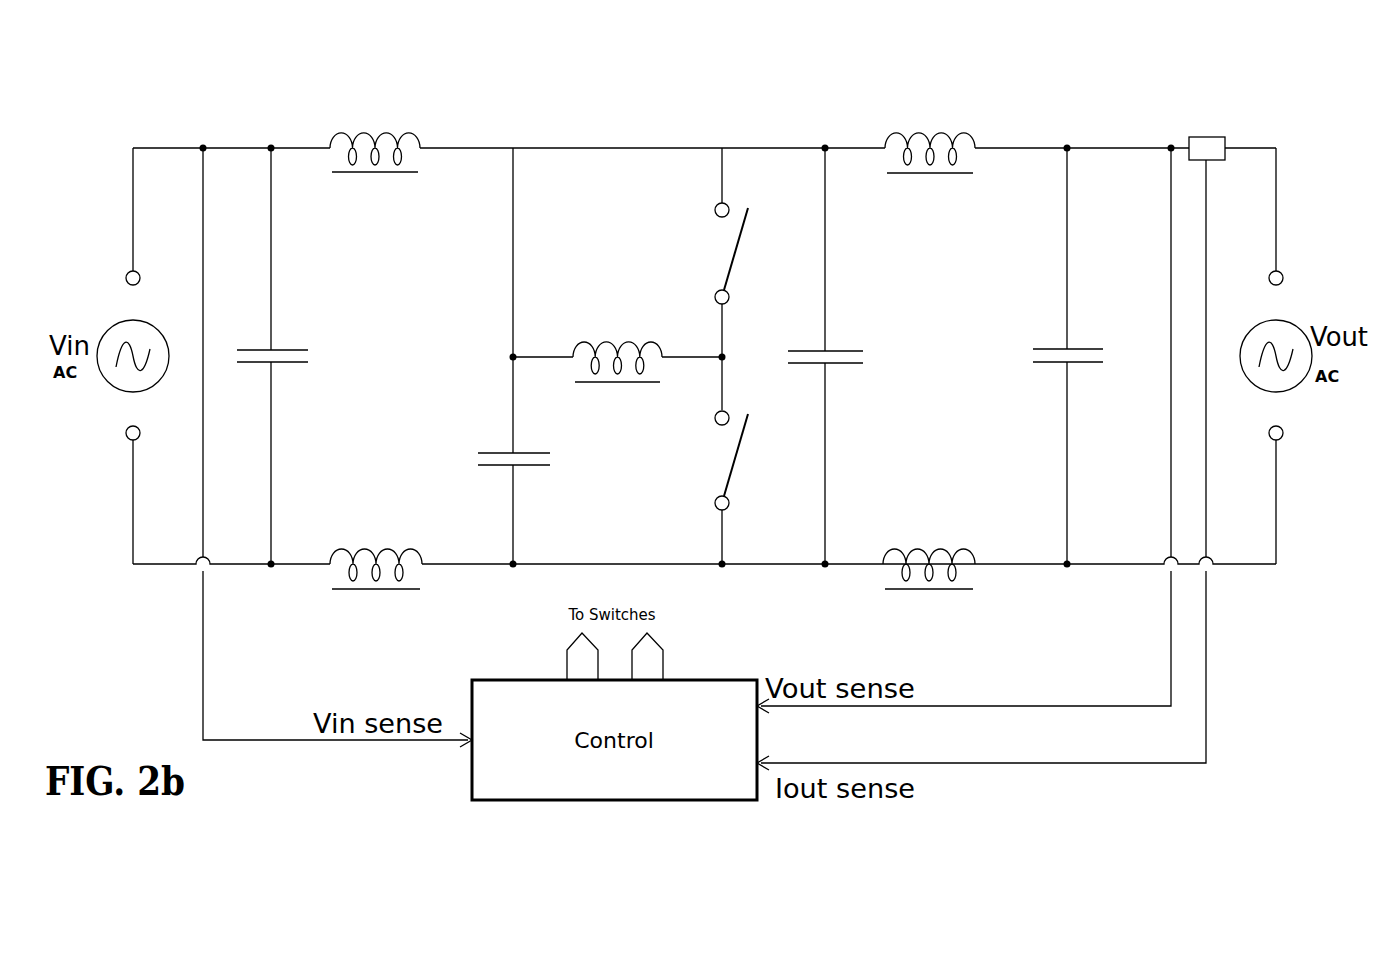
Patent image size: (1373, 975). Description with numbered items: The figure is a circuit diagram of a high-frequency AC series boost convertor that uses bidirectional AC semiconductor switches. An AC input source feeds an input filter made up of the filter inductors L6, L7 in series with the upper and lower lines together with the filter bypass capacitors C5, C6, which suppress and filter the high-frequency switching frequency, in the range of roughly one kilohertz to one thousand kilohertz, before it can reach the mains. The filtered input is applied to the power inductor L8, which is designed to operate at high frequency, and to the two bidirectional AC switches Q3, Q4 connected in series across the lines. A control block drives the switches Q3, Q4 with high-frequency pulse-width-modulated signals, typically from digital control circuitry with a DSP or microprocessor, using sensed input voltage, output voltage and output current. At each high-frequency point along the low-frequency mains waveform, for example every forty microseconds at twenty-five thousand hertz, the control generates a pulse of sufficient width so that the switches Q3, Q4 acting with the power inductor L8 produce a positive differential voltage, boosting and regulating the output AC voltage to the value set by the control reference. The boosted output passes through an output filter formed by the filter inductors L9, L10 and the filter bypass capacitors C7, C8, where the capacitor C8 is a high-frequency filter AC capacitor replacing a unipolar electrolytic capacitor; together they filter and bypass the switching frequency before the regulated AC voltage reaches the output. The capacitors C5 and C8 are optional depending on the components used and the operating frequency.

The filter bypass capacitor C5 is at (292, 356).
The filter inductor L6 is at (375, 137).
The filter inductor L7 is at (376, 553).
The power inductor L8 is at (617, 347).
The filter bypass capacitor C6 is at (493, 459).
The bidirectional AC switch Q3 is at (716, 253).
The bidirectional AC switch Q4 is at (716, 460).
The filter bypass capacitor C7 is at (846, 356).
The filter inductor L9 is at (930, 137).
The filter inductor L10 is at (929, 553).
The HF filter AC capacitor C8 is at (1087, 356).